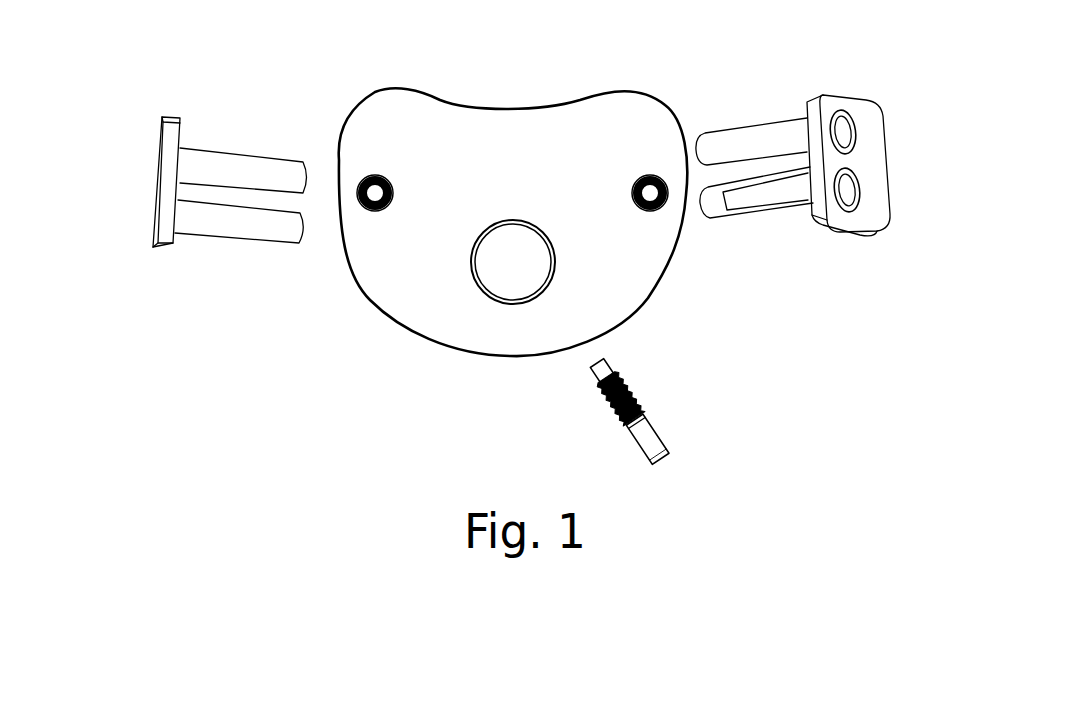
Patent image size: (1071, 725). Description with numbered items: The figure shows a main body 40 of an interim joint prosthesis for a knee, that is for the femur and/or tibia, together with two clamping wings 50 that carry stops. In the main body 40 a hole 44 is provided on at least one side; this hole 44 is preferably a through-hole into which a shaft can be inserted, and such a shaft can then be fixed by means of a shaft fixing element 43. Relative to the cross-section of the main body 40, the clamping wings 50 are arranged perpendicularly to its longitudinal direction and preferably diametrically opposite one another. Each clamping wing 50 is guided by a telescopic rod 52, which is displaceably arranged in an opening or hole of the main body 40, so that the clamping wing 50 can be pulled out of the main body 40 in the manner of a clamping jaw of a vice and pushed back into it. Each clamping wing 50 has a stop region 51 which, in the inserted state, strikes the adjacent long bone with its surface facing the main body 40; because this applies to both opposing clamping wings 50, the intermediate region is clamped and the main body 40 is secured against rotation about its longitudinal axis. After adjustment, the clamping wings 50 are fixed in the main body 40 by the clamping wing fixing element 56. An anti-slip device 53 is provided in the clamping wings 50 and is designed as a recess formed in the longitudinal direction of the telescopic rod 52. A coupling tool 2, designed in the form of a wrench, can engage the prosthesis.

The coupling tool 2 is at (673, 414).
The main body 40 is at (655, 84).
The shaft fixing element 43 is at (634, 392).
The hole 44 is at (498, 301).
The clamping wing 50 is at (530, 164).
The stop region 51 is at (163, 200).
The telescopic rod 52 is at (733, 137).
The anti-slip device 53 is at (773, 198).
The clamping wing fixing element 56 is at (664, 197).